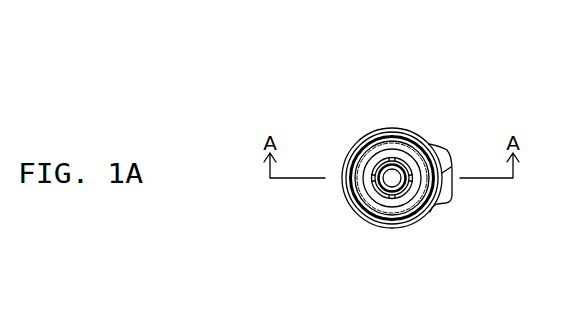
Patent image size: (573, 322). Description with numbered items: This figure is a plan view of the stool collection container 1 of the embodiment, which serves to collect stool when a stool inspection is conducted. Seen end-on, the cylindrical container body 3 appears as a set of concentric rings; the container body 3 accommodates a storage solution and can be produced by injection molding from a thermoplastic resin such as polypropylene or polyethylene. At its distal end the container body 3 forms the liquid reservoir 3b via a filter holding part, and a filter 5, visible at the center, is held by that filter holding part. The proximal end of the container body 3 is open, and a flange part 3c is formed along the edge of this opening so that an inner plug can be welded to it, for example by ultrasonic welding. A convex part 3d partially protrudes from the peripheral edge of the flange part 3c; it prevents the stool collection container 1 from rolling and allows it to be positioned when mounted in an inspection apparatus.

The stool collection container 1 is at (485, 90).
The container body 3 is at (382, 226).
The liquid reservoir 3b is at (403, 198).
The flange part 3c is at (360, 147).
The convex part 3d is at (447, 148).
The filter 5 is at (393, 179).